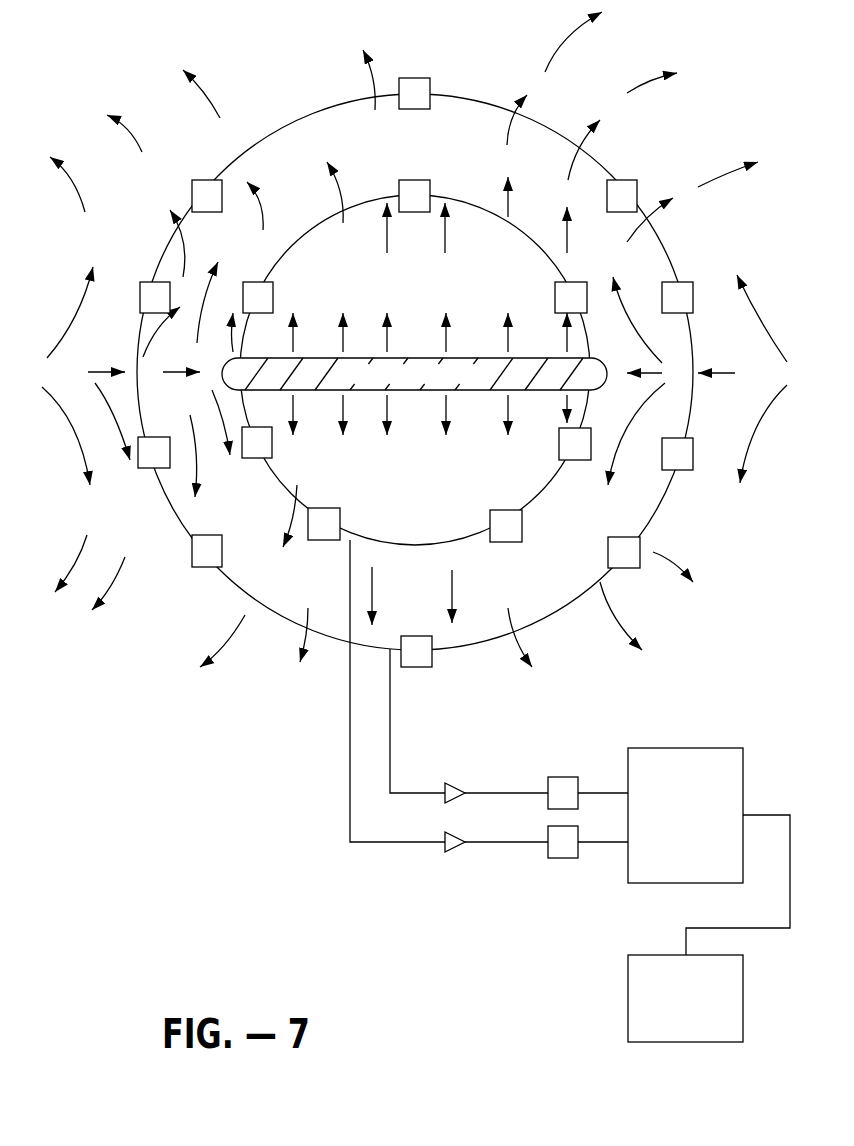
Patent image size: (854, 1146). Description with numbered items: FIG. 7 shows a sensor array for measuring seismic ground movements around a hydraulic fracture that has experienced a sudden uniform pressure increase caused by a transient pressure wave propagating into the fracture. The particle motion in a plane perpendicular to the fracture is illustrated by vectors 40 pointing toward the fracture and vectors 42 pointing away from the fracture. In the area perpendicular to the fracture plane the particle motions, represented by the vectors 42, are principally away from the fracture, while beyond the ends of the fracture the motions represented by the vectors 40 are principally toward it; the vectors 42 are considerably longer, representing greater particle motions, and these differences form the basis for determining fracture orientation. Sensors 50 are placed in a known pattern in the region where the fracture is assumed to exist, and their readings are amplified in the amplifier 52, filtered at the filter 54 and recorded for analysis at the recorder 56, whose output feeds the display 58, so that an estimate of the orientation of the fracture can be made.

The vectors pointing away from the fracture 42 is at (327, 195).
The vectors pointing toward the fracture 40 is at (165, 373).
The sensors 50 is at (152, 469).
The amplifier 52 is at (462, 838).
The filter 54 is at (574, 840).
The recorder 56 is at (704, 758).
The display 58 is at (645, 965).